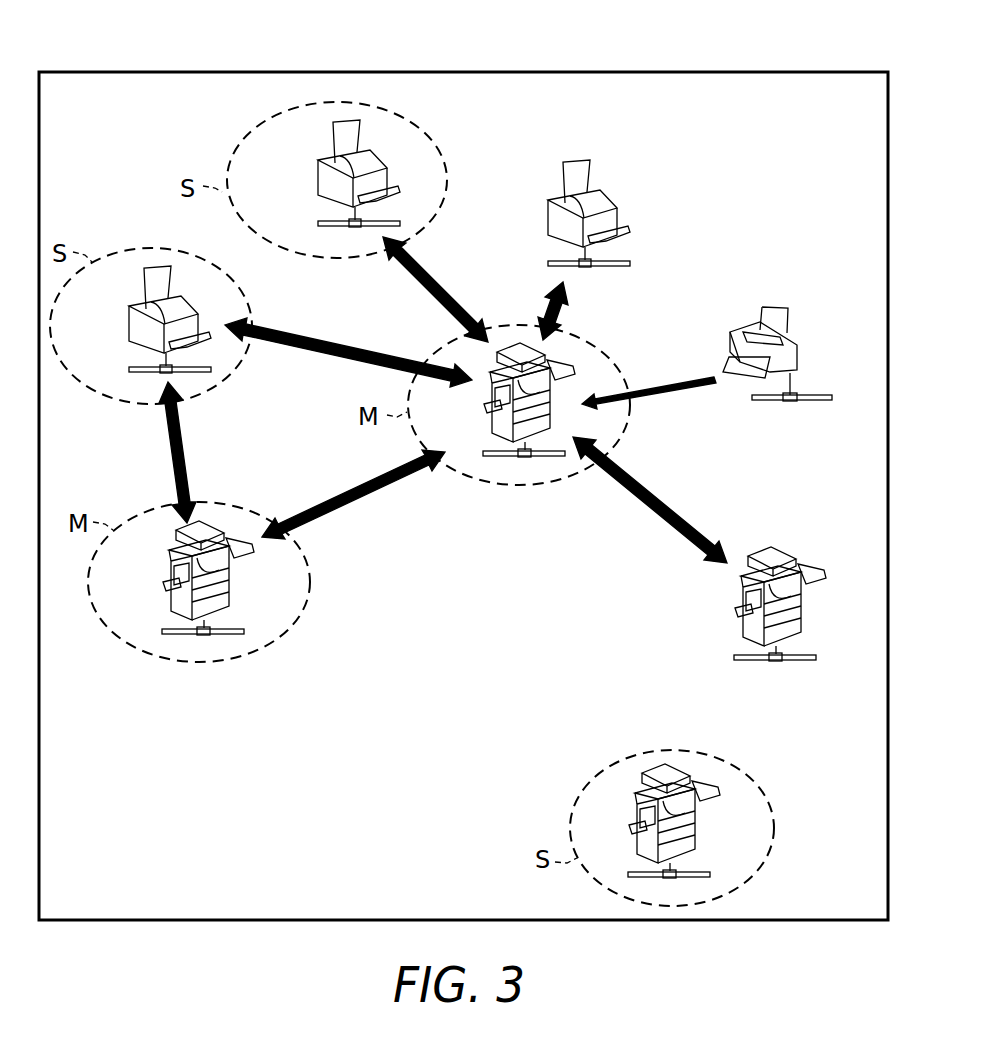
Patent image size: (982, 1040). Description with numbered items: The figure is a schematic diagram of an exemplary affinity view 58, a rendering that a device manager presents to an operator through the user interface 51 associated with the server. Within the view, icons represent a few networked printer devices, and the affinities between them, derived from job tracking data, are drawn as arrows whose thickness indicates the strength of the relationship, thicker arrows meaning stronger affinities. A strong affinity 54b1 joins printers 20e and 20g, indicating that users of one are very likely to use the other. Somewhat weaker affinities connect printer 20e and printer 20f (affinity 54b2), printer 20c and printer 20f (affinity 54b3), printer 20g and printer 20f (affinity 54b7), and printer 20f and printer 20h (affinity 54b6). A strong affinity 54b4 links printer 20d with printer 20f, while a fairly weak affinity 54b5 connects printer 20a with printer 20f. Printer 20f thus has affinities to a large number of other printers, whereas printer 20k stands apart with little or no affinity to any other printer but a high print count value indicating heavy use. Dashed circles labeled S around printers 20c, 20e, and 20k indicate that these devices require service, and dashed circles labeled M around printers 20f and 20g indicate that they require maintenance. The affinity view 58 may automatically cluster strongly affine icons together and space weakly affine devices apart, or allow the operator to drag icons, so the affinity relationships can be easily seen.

The user interface 51 is at (86, 35).
The affinity view 58 is at (828, 72).
The printer device 20a is at (727, 338).
The printer device 20c is at (318, 178).
The printer device 20d is at (547, 217).
The printer device 20e is at (128, 326).
The printer device 20f is at (492, 423).
The printer device 20g is at (172, 605).
The printer device 20h is at (743, 628).
The printer device 20k is at (697, 828).
The affinity 54b1 is at (165, 450).
The affinity 54b2 is at (345, 356).
The affinity 54b3 is at (422, 272).
The affinity 54b4 is at (570, 304).
The affinity 54b5 is at (655, 393).
The affinity 54b6 is at (642, 496).
The affinity 54b7 is at (348, 500).